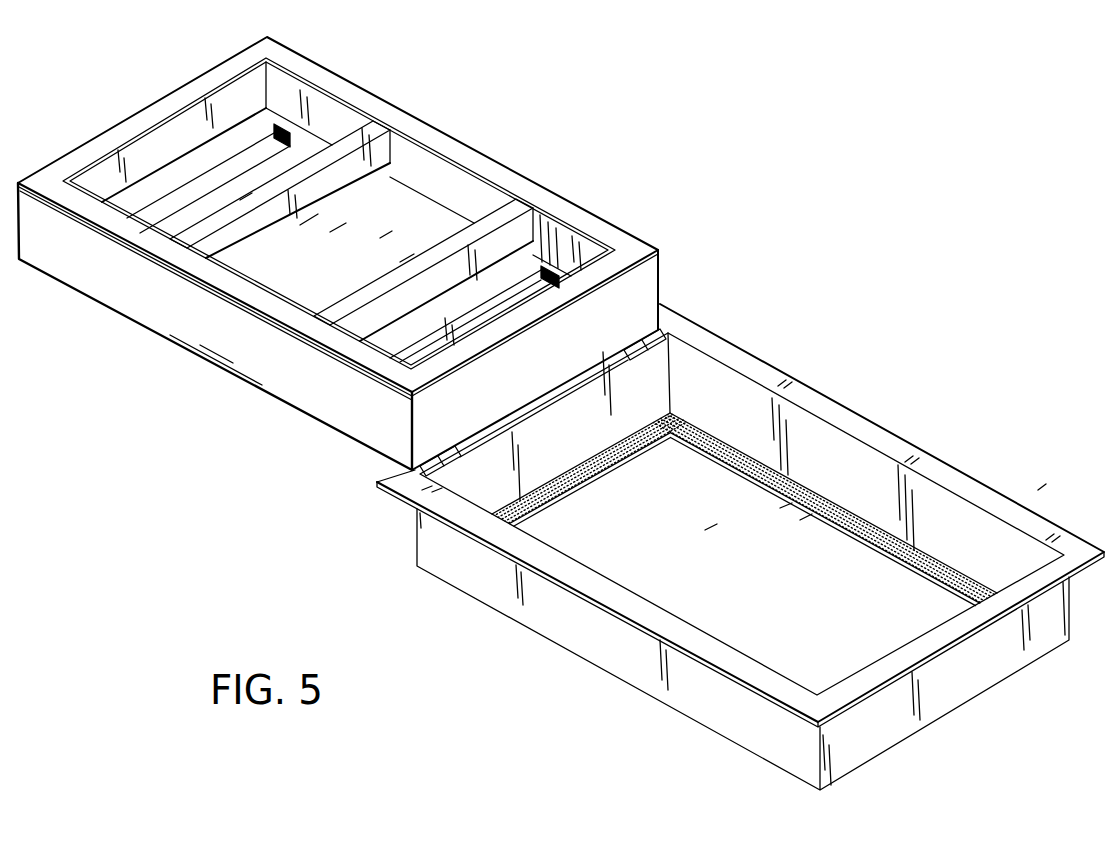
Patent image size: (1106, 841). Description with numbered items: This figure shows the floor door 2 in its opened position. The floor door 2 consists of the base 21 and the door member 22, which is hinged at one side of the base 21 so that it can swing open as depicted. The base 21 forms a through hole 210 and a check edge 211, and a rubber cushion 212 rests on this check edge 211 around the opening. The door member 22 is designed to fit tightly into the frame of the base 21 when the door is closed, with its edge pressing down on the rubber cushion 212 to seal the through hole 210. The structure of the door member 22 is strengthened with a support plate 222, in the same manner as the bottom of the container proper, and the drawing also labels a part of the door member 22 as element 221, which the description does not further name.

The floor door 2 is at (700, 300).
The base 21 is at (477, 578).
The through hole 210 is at (828, 592).
The check edge 211 is at (610, 480).
The rubber cushion 212 is at (730, 453).
The door member 22 is at (273, 375).
The top frame plate of lid 221 is at (453, 150).
The support plate 222 is at (497, 213).